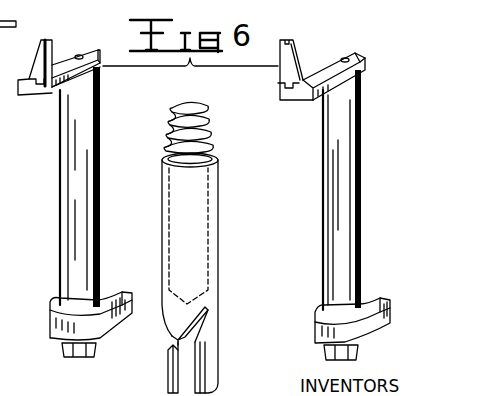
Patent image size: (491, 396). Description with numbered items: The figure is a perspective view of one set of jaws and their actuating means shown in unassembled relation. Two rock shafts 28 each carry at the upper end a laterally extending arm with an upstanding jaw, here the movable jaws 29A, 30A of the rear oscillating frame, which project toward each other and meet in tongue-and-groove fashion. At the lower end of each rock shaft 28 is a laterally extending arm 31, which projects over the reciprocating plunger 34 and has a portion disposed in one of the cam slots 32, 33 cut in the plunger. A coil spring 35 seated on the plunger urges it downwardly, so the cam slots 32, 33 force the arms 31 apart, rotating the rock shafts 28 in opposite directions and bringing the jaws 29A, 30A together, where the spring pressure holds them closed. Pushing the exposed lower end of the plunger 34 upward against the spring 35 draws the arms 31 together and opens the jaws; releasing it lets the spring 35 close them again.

The rock shaft 28 is at (67, 208).
The movable jaw 29A is at (53, 50).
The movable jaw 30A is at (293, 52).
The laterally extending arm 31 is at (105, 325).
The cam slot 32 is at (175, 338).
The cam slot 33 is at (200, 334).
The reciprocating plunger 34 is at (219, 248).
The coil spring 35 is at (210, 121).